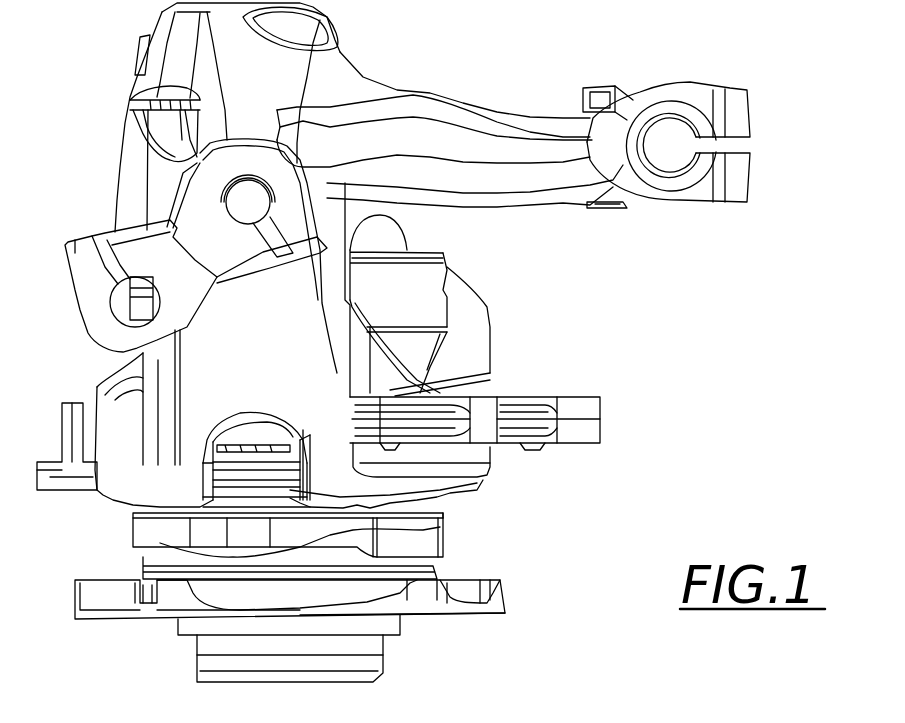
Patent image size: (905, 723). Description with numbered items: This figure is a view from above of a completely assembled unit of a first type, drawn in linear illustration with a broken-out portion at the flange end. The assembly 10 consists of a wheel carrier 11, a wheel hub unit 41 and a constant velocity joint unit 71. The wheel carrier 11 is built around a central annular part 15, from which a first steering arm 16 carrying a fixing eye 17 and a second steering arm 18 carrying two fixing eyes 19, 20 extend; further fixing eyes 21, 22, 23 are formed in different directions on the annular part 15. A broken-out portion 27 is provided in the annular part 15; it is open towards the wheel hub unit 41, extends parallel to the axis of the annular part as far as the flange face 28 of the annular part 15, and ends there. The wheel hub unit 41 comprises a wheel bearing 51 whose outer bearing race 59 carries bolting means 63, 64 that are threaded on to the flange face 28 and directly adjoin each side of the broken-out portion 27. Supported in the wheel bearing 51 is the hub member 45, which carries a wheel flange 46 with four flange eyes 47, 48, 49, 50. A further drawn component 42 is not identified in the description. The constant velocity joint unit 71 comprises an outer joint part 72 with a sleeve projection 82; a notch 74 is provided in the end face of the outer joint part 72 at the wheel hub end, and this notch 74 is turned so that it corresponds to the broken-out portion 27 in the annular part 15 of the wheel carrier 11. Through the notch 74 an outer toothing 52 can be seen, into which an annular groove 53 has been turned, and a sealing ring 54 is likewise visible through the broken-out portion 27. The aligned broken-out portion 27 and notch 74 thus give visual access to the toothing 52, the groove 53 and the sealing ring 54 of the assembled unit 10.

The assembly 10 is at (517, 45).
The wheel carrier 11 is at (540, 320).
The central annular part 15 is at (97, 390).
The first steering arm 16 is at (513, 117).
The fixing eye 17 is at (680, 113).
The second steering arm 18 is at (172, 235).
The fixing eye 19 is at (87, 290).
The fixing eye 20 is at (220, 196).
The further fixing eye 21 is at (477, 310).
The further fixing eye 22 is at (583, 402).
The further fixing eye 23 is at (460, 400).
The broken-out portion 27 is at (200, 480).
The flange face 28 is at (133, 527).
The wheel hub unit 41 is at (517, 577).
The nut 42 is at (373, 660).
The hub member 45 is at (400, 627).
The wheel flange 46 is at (243, 613).
The flange eye 47 is at (83, 600).
The flange eye 48 is at (173, 597).
The flange eye 49 is at (427, 593).
The flange eye 50 is at (497, 593).
The wheel bearing 51 is at (517, 523).
The outer toothing 52 is at (260, 420).
The annular groove 53 is at (287, 420).
The sealing ring 54 is at (217, 443).
The outer bearing race 59 is at (427, 565).
The bolting means 63 is at (440, 523).
The bolting means 64 is at (160, 543).
The constant velocity joint unit 71 is at (490, 267).
The outer joint part 72 is at (393, 267).
The notch 74 is at (237, 420).
The sleeve projection 82 is at (247, 420).